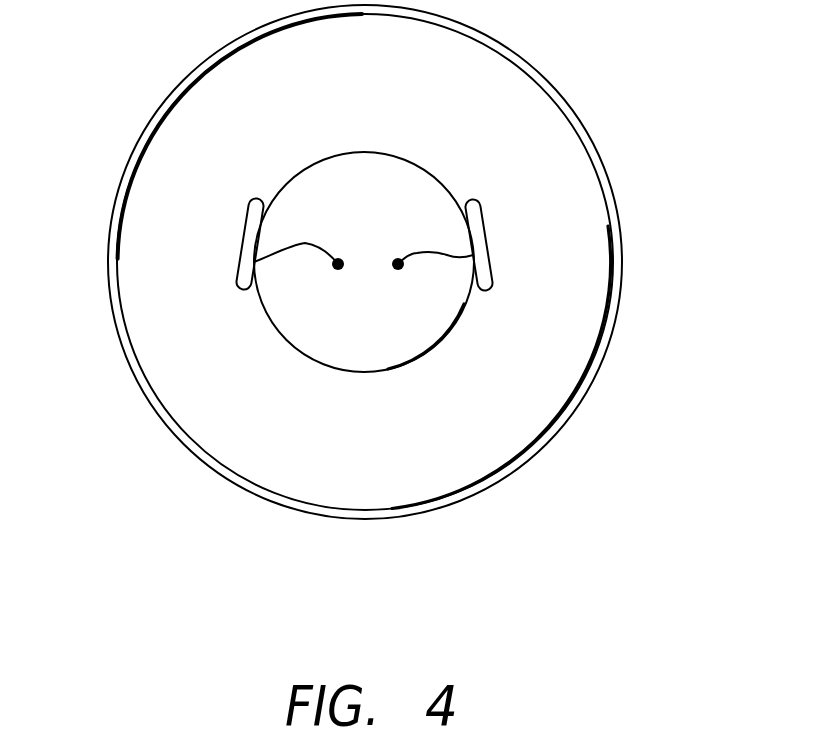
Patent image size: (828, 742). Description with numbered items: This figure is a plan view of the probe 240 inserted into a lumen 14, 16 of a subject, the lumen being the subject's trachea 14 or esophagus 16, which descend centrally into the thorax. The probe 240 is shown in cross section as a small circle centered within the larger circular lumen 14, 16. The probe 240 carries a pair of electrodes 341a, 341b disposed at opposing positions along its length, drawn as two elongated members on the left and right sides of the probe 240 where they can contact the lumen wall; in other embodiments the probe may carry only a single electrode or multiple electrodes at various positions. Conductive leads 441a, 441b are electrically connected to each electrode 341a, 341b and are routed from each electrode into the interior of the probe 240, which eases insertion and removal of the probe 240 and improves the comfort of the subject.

The trachea 14 is at (405, 262).
The esophagus 16 is at (527, 67).
The probe 240 is at (360, 373).
The electrode 341a is at (485, 218).
The electrode 341b is at (242, 228).
The conductive lead 441a is at (417, 253).
The conductive lead 441b is at (303, 243).